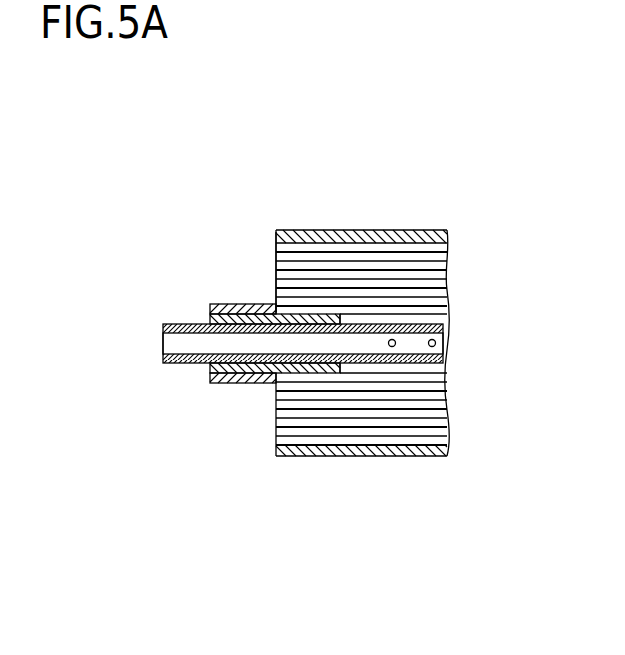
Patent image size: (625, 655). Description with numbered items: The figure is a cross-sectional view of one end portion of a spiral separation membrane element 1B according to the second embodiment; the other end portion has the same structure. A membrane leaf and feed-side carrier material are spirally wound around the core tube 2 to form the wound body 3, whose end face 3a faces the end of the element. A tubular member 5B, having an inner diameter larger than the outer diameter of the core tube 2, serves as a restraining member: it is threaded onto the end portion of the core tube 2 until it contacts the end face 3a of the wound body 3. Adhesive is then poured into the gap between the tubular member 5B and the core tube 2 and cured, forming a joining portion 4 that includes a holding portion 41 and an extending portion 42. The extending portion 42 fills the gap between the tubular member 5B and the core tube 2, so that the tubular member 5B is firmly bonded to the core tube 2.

The spiral separation membrane element 1B is at (340, 172).
The core tube 2 is at (186, 364).
The wound body 3 is at (403, 272).
The end face of the wound body 3a is at (273, 270).
The joining portion 4 is at (347, 553).
The holding portion 41 is at (302, 370).
The extending portion 42 is at (240, 383).
The tubular member 5B is at (243, 304).